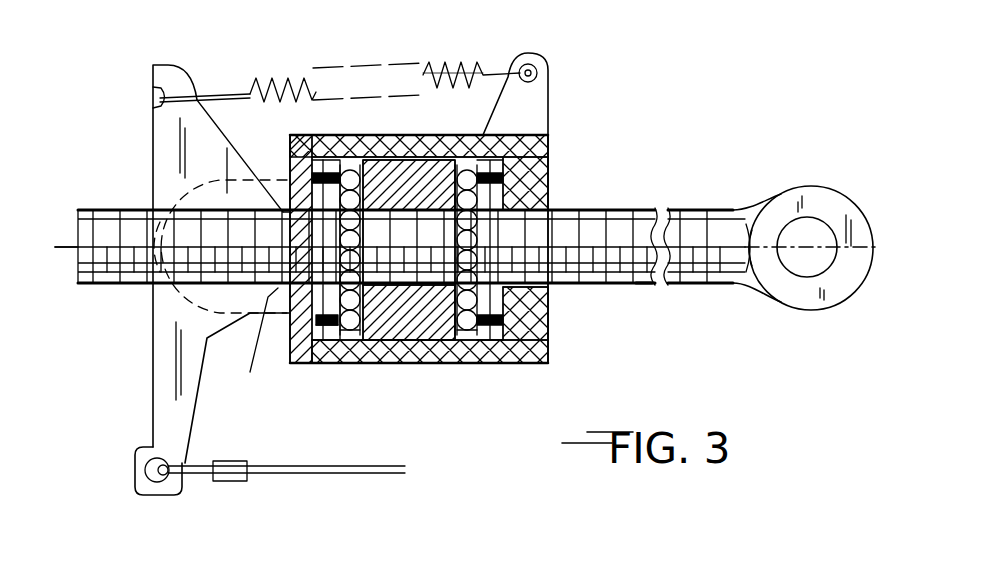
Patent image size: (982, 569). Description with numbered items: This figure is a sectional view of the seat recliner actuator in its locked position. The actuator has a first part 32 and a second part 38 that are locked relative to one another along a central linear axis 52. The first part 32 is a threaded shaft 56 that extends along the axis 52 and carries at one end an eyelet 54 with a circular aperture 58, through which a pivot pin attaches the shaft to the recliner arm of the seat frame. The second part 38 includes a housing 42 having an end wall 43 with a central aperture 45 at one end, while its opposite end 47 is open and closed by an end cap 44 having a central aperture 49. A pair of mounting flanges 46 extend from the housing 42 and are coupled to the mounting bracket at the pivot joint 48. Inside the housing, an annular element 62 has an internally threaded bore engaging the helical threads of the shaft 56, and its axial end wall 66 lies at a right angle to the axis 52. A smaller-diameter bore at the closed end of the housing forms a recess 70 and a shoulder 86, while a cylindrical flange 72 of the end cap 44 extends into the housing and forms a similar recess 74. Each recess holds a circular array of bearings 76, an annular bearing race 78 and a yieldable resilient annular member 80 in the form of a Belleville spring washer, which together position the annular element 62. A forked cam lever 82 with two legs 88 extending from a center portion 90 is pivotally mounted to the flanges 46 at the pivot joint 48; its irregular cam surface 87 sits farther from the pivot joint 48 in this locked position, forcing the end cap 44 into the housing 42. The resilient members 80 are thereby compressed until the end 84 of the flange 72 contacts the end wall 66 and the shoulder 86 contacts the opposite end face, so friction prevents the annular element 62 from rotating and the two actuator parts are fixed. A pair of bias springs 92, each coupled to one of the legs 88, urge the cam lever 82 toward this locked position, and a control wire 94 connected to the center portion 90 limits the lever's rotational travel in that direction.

The first part 32 is at (640, 205).
The second part 38 is at (487, 367).
The housing 42 is at (352, 360).
The end wall 43 is at (540, 318).
The end cap 44 is at (237, 388).
The central aperture 45 is at (550, 203).
The mounting flanges 46 is at (150, 346).
The opposite end 47 is at (323, 345).
The pivot joint 48 is at (160, 290).
The central aperture 49 is at (244, 330).
The central linear axis 52 is at (60, 247).
The eyelet 54 is at (822, 186).
The shaft 56 is at (634, 290).
The circular aperture 58 is at (812, 270).
The annular element 62 is at (423, 148).
The axial end wall 66 is at (337, 350).
The recess 70 is at (530, 172).
The cylindrical flange 72 is at (382, 133).
The recess 74 is at (318, 328).
The bearings 76 is at (290, 298).
The annular bearing race 78 is at (328, 146).
The yieldable resilient annular member 80 is at (304, 160).
The cam lever 82 is at (150, 120).
The end 84 is at (390, 150).
The shoulder 86 is at (495, 160).
The cam surface 87 is at (288, 198).
The legs 88 is at (160, 156).
The center portion 90 is at (160, 405).
The bias springs 92 is at (268, 80).
The control wire 94 is at (402, 470).